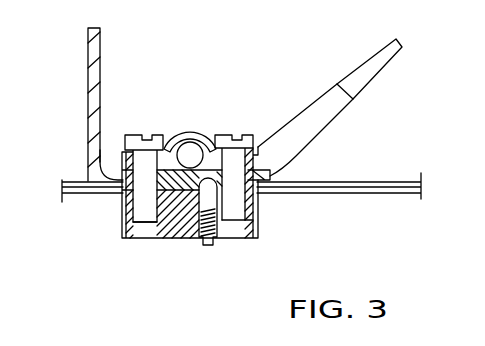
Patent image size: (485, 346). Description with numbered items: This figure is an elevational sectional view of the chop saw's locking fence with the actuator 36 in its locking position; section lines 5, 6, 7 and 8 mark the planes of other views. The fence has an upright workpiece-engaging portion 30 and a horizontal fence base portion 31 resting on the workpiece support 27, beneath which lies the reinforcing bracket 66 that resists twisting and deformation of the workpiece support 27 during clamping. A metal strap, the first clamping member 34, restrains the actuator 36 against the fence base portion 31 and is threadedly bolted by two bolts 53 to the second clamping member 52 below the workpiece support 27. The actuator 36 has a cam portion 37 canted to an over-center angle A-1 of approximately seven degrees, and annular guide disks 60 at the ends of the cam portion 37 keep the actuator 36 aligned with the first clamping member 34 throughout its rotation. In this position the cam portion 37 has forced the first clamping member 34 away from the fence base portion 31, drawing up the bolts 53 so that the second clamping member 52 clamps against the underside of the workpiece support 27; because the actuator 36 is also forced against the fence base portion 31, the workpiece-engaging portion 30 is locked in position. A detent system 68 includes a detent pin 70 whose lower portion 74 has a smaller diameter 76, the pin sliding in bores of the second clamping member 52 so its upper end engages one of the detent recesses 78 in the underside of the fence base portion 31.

The workpiece support 27 is at (64, 182).
The workpiece-engaging portion 30 is at (98, 42).
The fence base portion 31 is at (272, 177).
The first clamping member 34 is at (259, 143).
The actuator 36 is at (320, 86).
The cam portion 37 is at (116, 172).
The second clamping member 52 is at (255, 222).
The bolts 53 is at (178, 198).
The guide disks 60 is at (386, 64).
The reinforcing bracket 66 is at (356, 188).
The detent system 68 is at (190, 194).
The detent pin 70 is at (254, 204).
The lower portion 74 is at (192, 198).
The smaller diameter 76 is at (208, 245).
The detent recesses 78 is at (247, 125).
The section line 5- 5 is at (197, 298).
The section line 6- 6 is at (188, 277).
The section line 7- 7 is at (143, 247).
The section line 8- 8 is at (227, 322).
The over-center angle A-1 is at (178, 76).